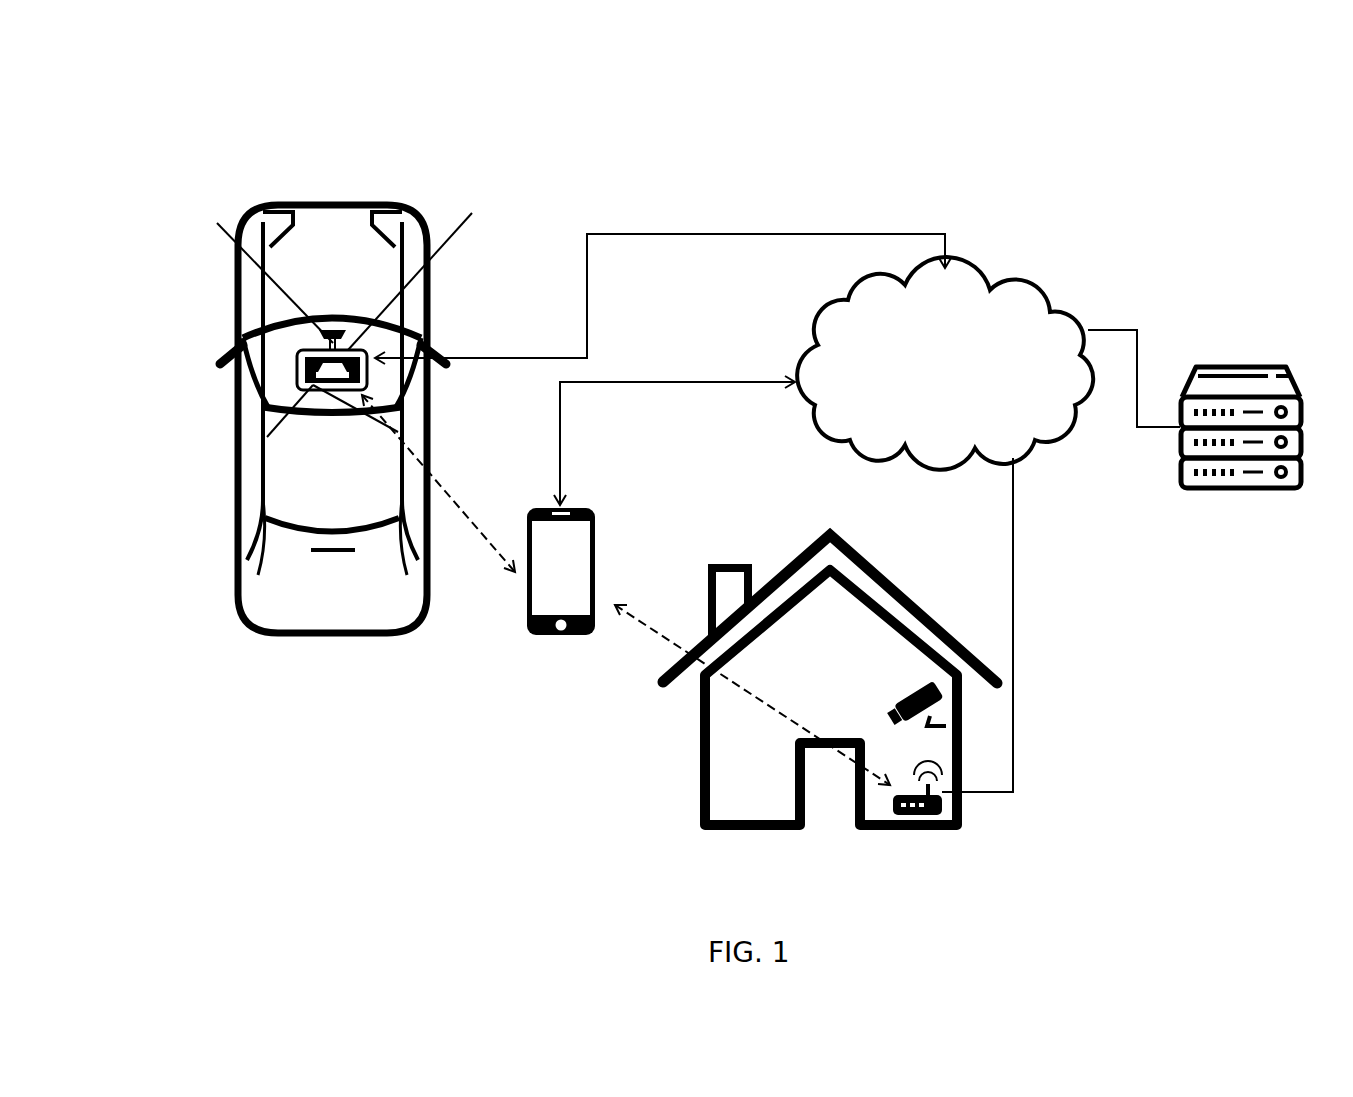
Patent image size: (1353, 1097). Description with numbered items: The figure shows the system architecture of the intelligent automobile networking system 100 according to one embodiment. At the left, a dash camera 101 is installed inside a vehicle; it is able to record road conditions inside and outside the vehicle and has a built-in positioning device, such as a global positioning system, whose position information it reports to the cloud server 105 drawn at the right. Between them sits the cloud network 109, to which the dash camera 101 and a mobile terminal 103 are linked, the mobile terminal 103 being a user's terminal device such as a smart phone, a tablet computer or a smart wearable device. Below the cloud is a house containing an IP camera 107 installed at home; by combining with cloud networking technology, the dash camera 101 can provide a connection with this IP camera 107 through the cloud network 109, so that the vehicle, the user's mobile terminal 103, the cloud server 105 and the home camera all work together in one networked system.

The intelligent automobile networking system 100 is at (308, 72).
The dash camera 101 is at (302, 419).
The mobile terminal 103 is at (541, 635).
The cloud server 105 is at (1215, 487).
The IP camera 107 is at (929, 629).
The cloud network 109 is at (950, 324).